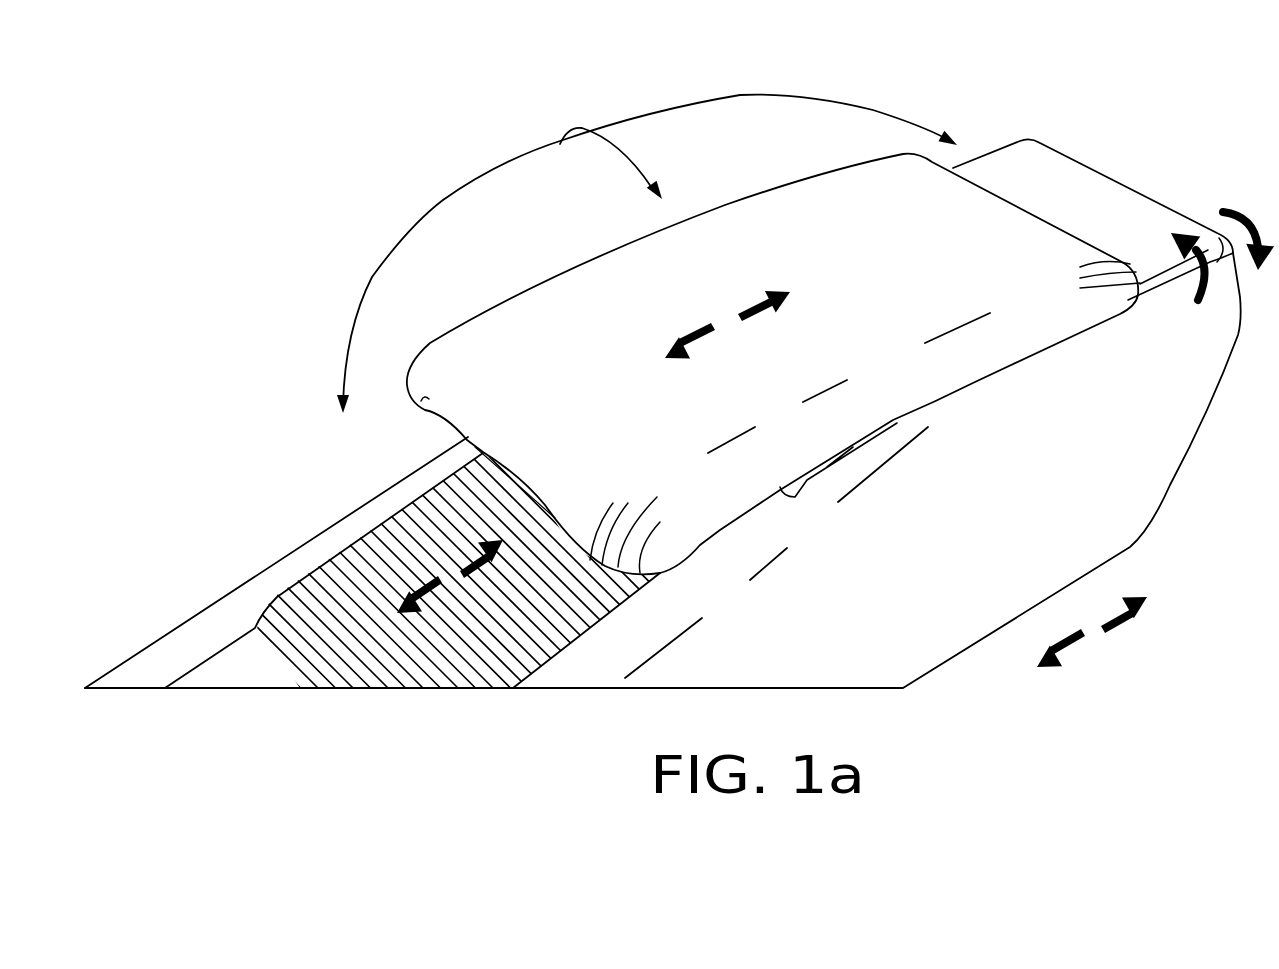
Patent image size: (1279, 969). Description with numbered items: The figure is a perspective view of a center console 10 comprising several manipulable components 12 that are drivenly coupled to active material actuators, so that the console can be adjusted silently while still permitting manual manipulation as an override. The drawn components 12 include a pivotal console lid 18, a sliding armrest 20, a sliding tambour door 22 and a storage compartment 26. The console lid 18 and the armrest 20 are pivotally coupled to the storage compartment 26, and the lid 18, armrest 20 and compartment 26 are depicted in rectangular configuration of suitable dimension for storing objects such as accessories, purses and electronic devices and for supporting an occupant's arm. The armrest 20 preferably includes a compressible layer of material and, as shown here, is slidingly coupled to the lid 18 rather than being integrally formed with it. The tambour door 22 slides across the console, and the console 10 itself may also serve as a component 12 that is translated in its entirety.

The center console 10 is at (285, 178).
The manipulable component 12 is at (558, 143).
The console lid 18 is at (1007, 173).
The sliding armrest 20 is at (914, 271).
The sliding tambour door 22 is at (343, 587).
The storage compartment 26 is at (916, 571).